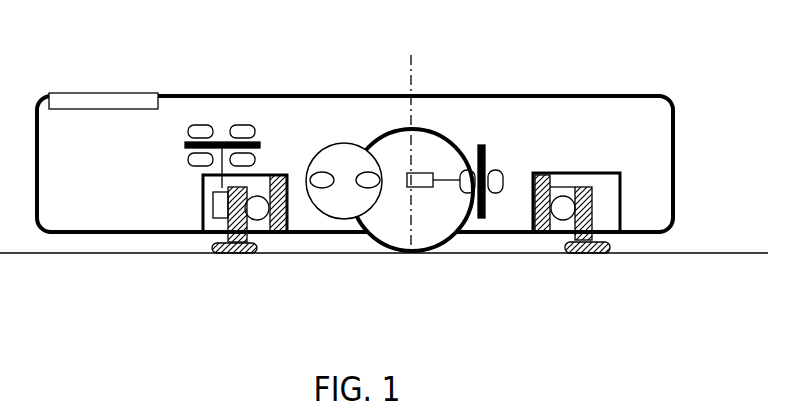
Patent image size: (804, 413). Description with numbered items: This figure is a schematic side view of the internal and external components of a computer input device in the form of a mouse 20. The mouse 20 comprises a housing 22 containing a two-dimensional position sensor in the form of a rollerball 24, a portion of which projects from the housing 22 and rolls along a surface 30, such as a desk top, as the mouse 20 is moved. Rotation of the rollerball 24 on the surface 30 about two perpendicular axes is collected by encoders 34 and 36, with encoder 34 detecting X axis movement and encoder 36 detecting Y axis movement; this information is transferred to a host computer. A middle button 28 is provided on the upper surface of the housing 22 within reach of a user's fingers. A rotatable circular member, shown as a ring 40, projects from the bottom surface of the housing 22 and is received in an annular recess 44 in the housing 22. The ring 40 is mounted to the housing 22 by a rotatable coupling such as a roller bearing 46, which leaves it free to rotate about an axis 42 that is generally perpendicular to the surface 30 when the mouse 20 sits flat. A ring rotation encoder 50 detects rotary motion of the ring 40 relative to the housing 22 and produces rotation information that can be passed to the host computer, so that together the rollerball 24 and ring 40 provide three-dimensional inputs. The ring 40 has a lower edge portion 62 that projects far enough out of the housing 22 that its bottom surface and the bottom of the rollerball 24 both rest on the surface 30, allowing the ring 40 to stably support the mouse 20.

The mouse 20 is at (398, 125).
The housing 22 is at (560, 96).
The rollerball 24 is at (398, 227).
The middle button 28 is at (102, 103).
The surface 30 is at (726, 253).
The encoder 34 is at (492, 209).
The encoder 36 is at (312, 214).
The ring 40 is at (599, 184).
The axis 42 is at (411, 56).
The annular recess 44 is at (598, 249).
The roller bearing 46 is at (563, 210).
The ring rotation encoder 50 is at (222, 124).
The lower edge portion 62 is at (588, 245).